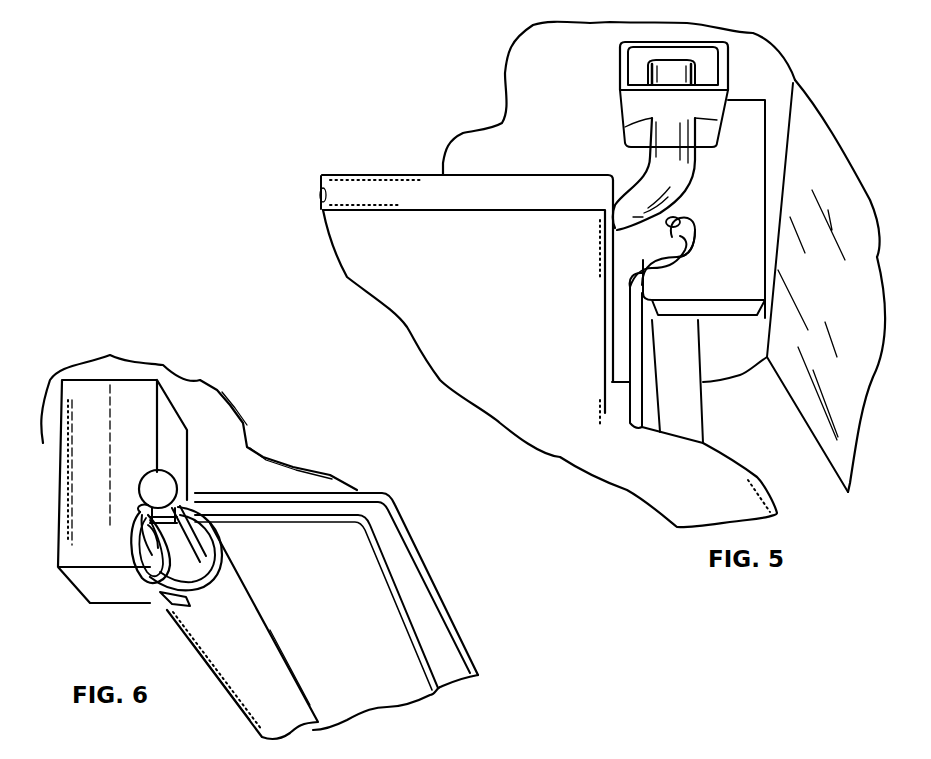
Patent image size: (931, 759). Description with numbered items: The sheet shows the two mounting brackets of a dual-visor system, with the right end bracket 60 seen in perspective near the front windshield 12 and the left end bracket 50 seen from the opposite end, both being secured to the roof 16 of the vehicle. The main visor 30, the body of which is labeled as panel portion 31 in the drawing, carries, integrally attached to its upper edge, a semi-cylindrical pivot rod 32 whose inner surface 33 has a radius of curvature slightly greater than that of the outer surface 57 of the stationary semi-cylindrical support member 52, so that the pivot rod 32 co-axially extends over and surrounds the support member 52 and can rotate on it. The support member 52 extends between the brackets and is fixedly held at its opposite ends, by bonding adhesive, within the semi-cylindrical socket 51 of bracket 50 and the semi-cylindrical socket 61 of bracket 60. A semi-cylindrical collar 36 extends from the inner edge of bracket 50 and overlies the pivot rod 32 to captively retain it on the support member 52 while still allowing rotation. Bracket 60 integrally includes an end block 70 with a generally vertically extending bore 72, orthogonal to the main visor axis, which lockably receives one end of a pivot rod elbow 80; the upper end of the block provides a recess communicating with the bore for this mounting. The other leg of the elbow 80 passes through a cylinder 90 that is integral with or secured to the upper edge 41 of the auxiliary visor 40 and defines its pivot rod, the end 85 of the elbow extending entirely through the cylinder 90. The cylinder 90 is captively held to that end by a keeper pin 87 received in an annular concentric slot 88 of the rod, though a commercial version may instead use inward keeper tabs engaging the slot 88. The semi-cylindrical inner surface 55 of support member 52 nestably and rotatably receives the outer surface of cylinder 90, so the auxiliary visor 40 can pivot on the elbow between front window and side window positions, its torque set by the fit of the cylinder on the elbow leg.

In FIG. 5, the front windshield 12 is at (860, 336).
In FIG. 5, the roof 16 is at (502, 123).
In FIG. 6, the roof 16 is at (195, 391).
In FIG. 5, the main visor 30 is at (647, 408).
In FIG. 6, the main visor 30 is at (331, 650).
In FIG. 6, the tube wall 31 is at (302, 695).
In FIG. 6, the pivot rod 32 is at (268, 670).
In FIG. 6, the inner surface 33 is at (215, 562).
In FIG. 6, the collar 36 is at (182, 603).
In FIG. 5, the auxiliary visor 40 is at (513, 335).
In FIG. 6, the auxiliary visor 40 is at (410, 557).
In FIG. 5, the upper edge 41 is at (520, 208).
In FIG. 6, the mounting bracket 50 is at (86, 596).
In FIG. 6, the semi-cylindrical socket 51 is at (132, 510).
In FIG. 6, the support member 52 is at (142, 526).
In FIG. 5, the inner surface 55 is at (683, 217).
In FIG. 5, the outer surface 57 is at (690, 230).
In FIG. 6, the outer surface 57 is at (140, 515).
In FIG. 5, the mounting bracket 60 is at (755, 195).
In FIG. 5, the semi-cylindrical socket 61 is at (697, 235).
In FIG. 5, the end block 70 is at (627, 95).
In FIG. 5, the bore 72 is at (624, 127).
In FIG. 5, the pivot rod elbow 80 is at (677, 162).
In FIG. 6, the end 85 is at (170, 488).
In FIG. 6, the keeper pin 87 is at (130, 578).
In FIG. 6, the annular concentric slot 88 is at (187, 498).
In FIG. 5, the cylinder 90 is at (415, 175).